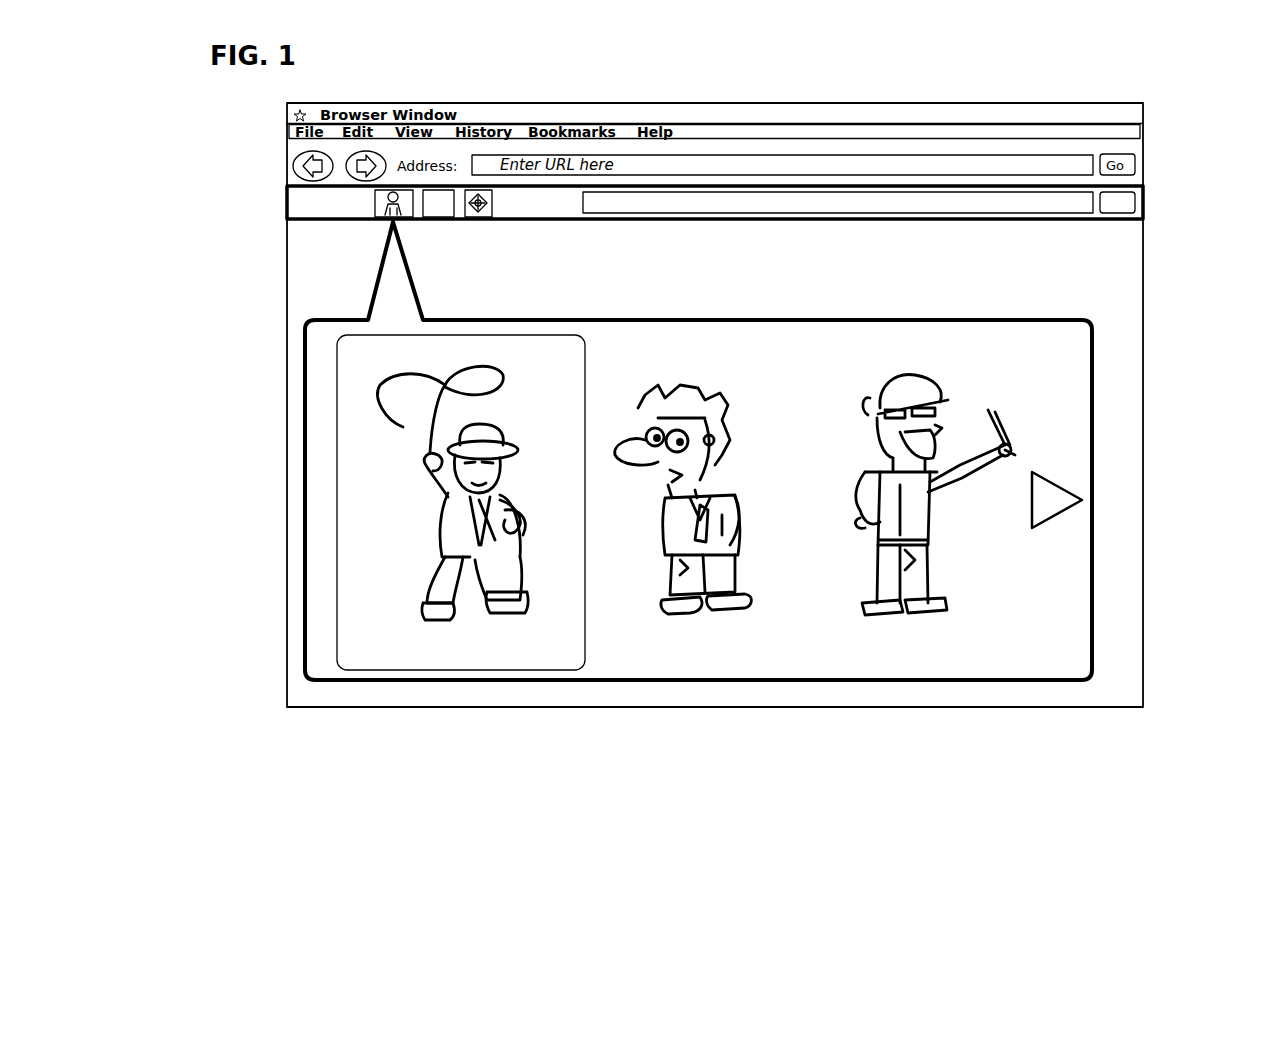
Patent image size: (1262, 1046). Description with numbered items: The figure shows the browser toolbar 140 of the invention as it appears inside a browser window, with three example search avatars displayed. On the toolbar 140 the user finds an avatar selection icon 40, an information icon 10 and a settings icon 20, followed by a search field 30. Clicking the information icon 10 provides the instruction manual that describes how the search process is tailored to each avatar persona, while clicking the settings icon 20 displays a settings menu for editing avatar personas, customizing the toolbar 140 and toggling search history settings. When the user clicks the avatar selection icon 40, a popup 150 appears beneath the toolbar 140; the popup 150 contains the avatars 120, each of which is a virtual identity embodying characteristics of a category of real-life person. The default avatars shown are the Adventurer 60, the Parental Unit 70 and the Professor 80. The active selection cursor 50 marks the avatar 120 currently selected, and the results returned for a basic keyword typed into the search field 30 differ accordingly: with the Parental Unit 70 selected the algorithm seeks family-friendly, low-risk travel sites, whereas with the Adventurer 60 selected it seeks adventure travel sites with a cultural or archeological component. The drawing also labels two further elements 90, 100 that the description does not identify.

The information icon 10 is at (449, 192).
The settings icon 20 is at (490, 204).
The search field 30 is at (722, 205).
The avatar selection icon 40 is at (380, 205).
The selection cursor 50 is at (355, 563).
The Adventurer avatar 60 is at (437, 620).
The Parental Unit avatar 70 is at (664, 598).
The Professor avatar 80 is at (913, 615).
The More button 90 is at (1062, 490).
The Go button 100 is at (1133, 203).
The avatar 120 is at (793, 656).
The toolbar 140 is at (266, 205).
The popup 150 is at (323, 343).